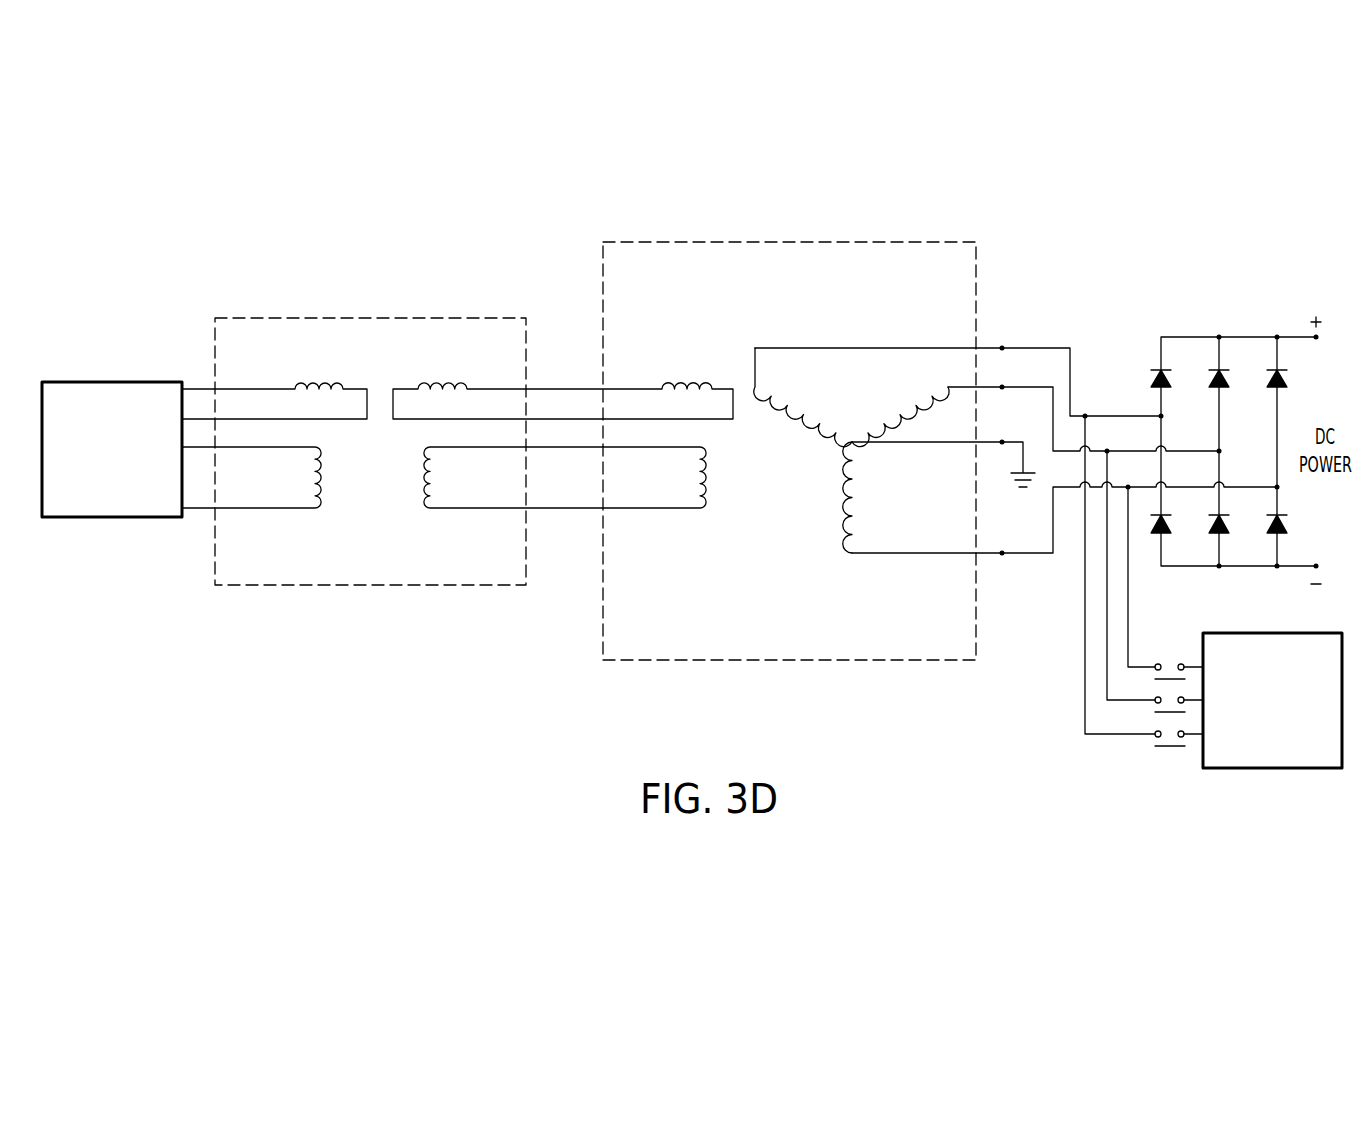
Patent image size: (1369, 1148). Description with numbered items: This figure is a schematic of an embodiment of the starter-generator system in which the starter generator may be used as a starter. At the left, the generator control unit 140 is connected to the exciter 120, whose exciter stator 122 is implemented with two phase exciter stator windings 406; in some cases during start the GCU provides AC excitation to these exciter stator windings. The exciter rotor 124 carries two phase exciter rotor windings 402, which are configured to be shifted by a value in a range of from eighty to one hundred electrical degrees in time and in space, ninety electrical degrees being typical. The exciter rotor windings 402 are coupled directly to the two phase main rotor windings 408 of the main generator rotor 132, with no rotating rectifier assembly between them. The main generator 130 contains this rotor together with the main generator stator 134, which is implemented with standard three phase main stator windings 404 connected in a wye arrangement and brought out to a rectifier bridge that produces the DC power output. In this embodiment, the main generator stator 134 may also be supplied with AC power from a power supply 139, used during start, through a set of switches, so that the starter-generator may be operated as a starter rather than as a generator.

The generator control unit 140 is at (110, 382).
The exciter 120 is at (352, 318).
The exciter stator 122 is at (312, 382).
The exciter rotor 124 is at (455, 382).
The exciter stator windings 406 is at (316, 394).
The exciter rotor windings 402 is at (440, 394).
The main rotor windings 408 is at (688, 394).
The main generator 130 is at (782, 242).
The main generator rotor 132 is at (657, 357).
The main generator stator 134 is at (884, 332).
The main stator windings 404 is at (878, 412).
The power supply 139 is at (1270, 768).